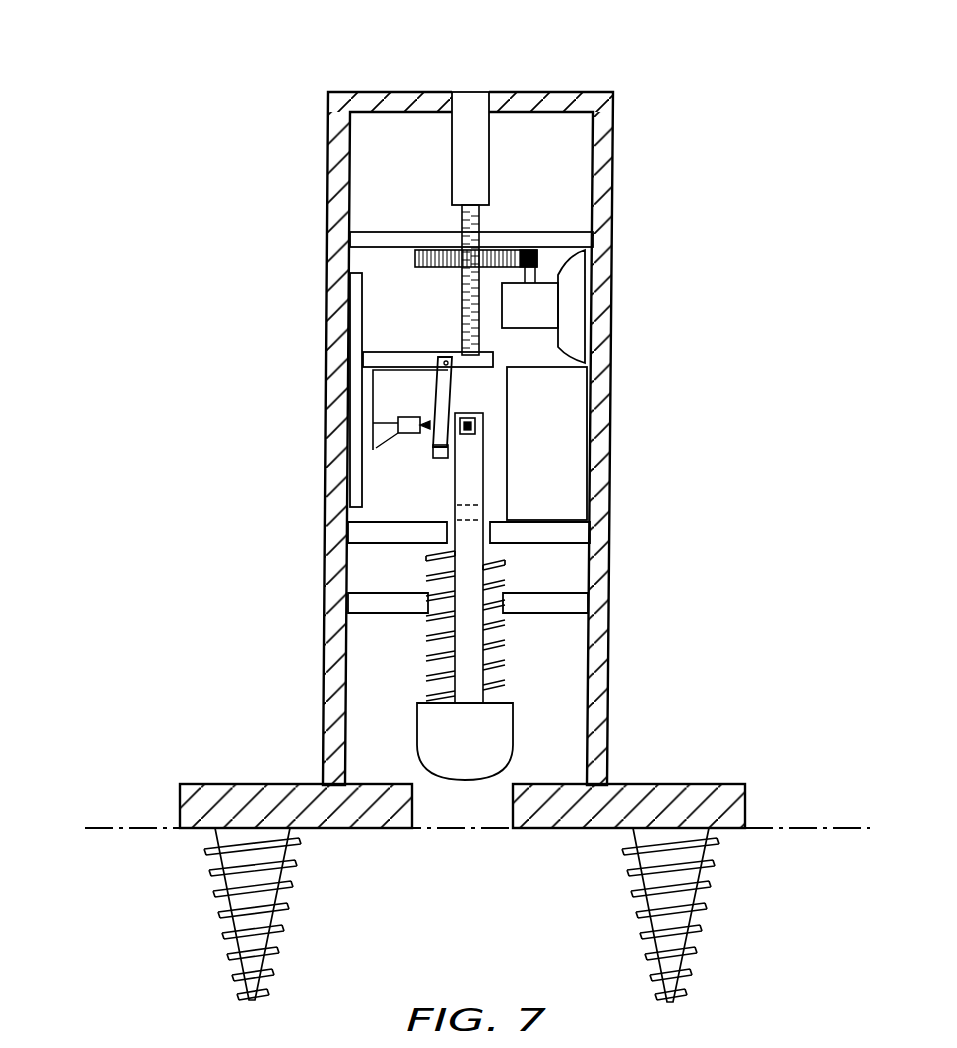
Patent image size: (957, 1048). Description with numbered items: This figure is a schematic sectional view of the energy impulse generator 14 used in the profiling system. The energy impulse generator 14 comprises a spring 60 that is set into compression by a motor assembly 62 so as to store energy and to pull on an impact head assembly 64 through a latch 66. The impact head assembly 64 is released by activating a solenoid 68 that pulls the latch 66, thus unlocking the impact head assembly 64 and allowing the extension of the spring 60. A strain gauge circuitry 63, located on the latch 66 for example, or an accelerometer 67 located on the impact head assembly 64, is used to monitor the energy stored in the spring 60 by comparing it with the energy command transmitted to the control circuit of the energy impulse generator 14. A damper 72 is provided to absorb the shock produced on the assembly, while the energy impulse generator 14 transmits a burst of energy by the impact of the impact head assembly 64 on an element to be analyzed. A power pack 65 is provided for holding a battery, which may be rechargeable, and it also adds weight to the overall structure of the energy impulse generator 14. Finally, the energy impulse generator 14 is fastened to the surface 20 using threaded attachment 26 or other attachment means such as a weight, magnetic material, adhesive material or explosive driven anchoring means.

The energy impulse generator 14 is at (690, 46).
The damper 72 is at (468, 118).
The motor assembly 62 is at (535, 297).
The latch 66 is at (437, 397).
The solenoid 68 is at (402, 433).
The strain gauge circuitry 63 is at (430, 452).
The accelerometer 67 is at (473, 425).
The power pack 65 is at (557, 423).
The spring 60 is at (500, 653).
The impact head assembly 64 is at (470, 740).
The surface 20 is at (793, 820).
The threaded attachment 26 is at (230, 923).